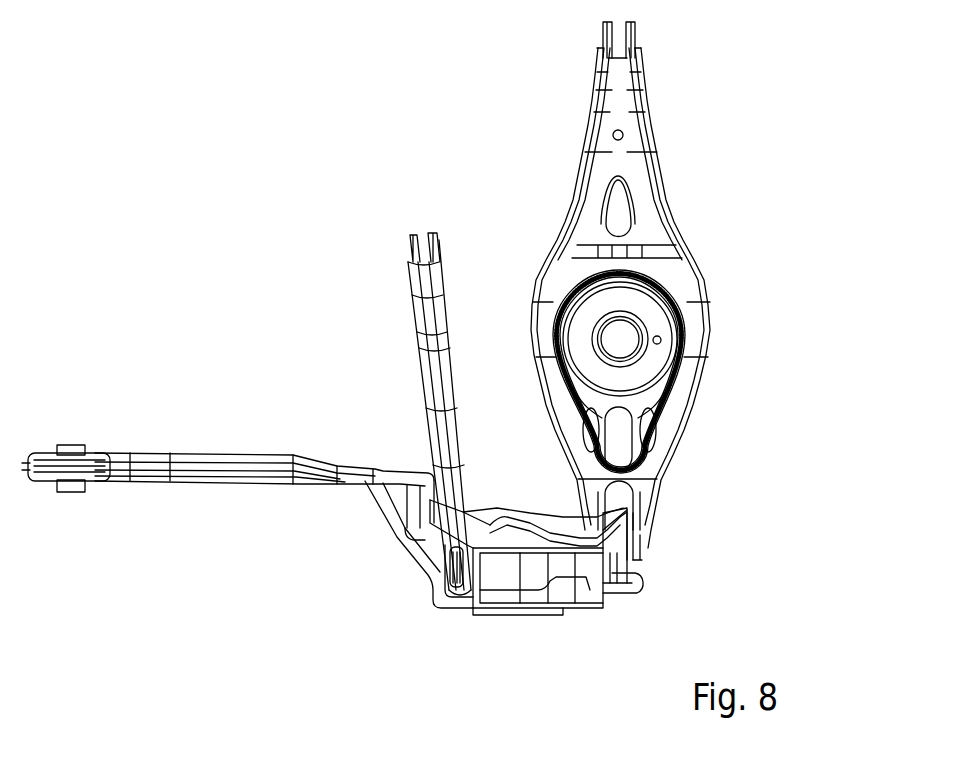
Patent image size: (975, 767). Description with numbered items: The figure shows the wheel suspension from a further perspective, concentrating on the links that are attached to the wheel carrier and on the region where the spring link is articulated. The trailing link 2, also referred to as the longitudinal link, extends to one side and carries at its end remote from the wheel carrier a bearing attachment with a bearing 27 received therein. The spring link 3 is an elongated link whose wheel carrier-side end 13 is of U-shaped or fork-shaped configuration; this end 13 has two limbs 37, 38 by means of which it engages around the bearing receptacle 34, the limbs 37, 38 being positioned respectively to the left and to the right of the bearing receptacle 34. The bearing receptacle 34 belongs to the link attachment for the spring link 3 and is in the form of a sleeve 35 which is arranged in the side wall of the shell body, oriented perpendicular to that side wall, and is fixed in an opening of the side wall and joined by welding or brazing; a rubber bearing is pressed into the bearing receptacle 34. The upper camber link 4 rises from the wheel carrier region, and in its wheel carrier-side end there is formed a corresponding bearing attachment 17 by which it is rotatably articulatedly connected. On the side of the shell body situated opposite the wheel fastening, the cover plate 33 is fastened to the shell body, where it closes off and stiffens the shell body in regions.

The trailing link 2 is at (243, 446).
The spring link 3 is at (679, 230).
The camber link 4 is at (427, 386).
The wheel carrier-side end 13 is at (694, 450).
The bearing attachment 17 is at (449, 582).
The bearing 27 is at (94, 456).
The cover plate 33 is at (610, 568).
The bearing receptacle 34 is at (645, 562).
The sleeve 35 is at (627, 555).
The limb 37 is at (648, 541).
The limb 38 is at (581, 503).